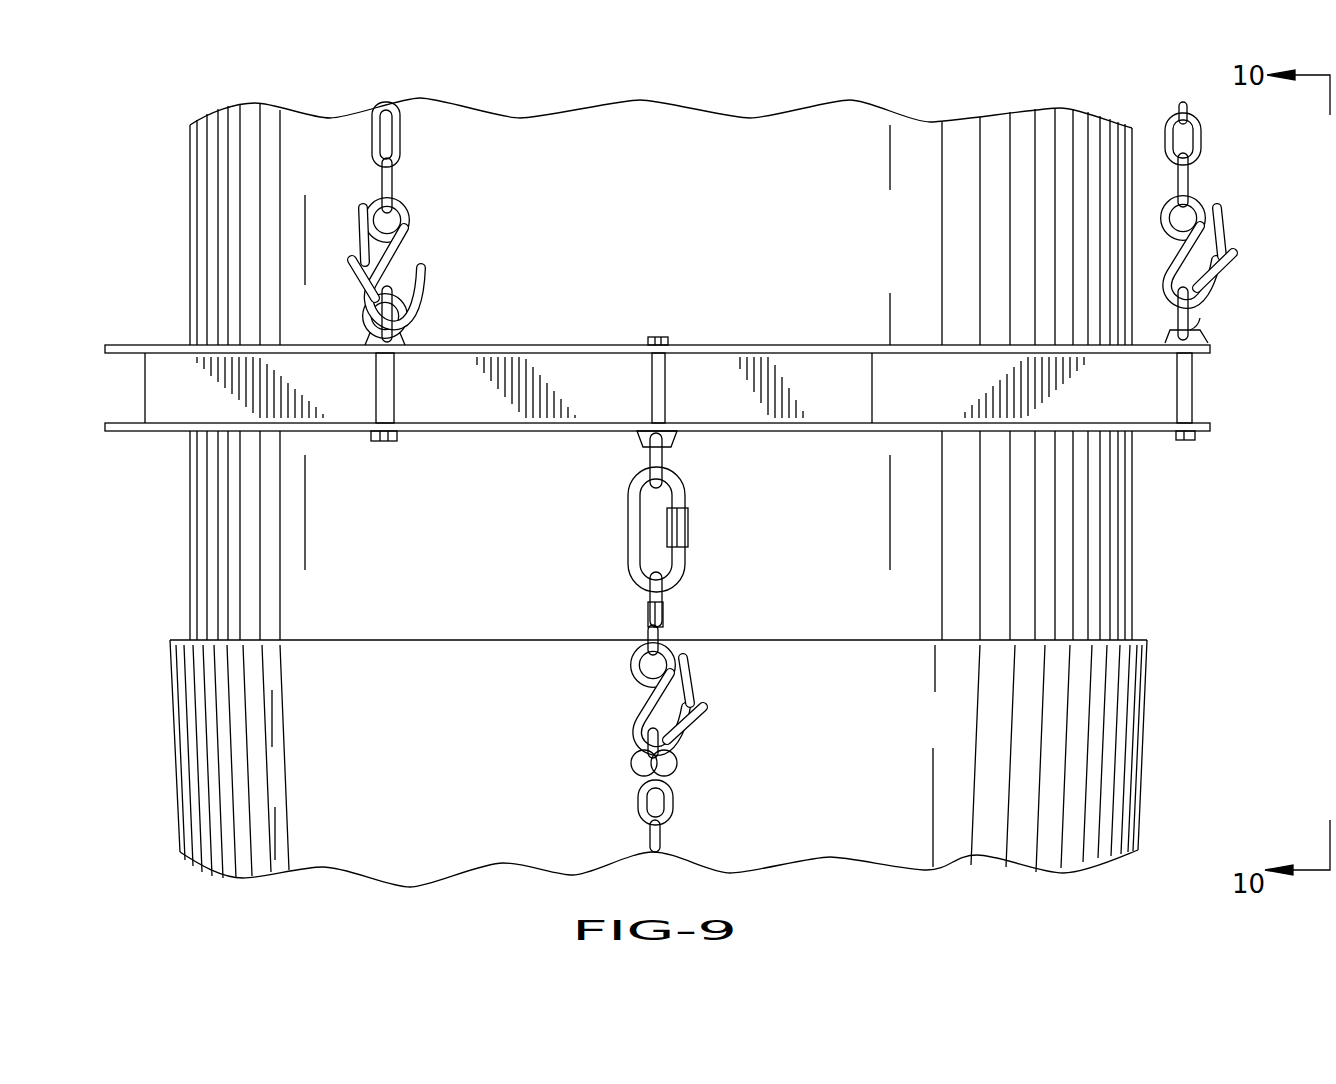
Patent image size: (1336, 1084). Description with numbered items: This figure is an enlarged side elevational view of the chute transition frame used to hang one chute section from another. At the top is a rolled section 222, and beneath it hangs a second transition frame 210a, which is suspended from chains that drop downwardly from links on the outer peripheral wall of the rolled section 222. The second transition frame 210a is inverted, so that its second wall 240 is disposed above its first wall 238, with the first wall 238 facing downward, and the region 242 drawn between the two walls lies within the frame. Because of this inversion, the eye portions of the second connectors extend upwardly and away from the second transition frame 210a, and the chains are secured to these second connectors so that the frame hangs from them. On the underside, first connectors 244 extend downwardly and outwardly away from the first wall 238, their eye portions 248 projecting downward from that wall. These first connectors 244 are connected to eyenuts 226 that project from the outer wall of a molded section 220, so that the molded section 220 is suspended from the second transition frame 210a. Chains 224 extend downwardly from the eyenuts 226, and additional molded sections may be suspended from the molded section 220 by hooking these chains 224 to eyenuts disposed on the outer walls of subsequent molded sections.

The second transition frame 210a is at (657, 392).
The molded section 220 is at (1152, 743).
The rolled section 222 is at (185, 232).
The chains 224 is at (630, 805).
The eyenuts 226 is at (658, 762).
The first wall 238 is at (745, 432).
The second wall 240 is at (727, 345).
The spacer web 242 is at (828, 400).
The first connectors 244 is at (648, 383).
The eye portions 248 is at (652, 455).